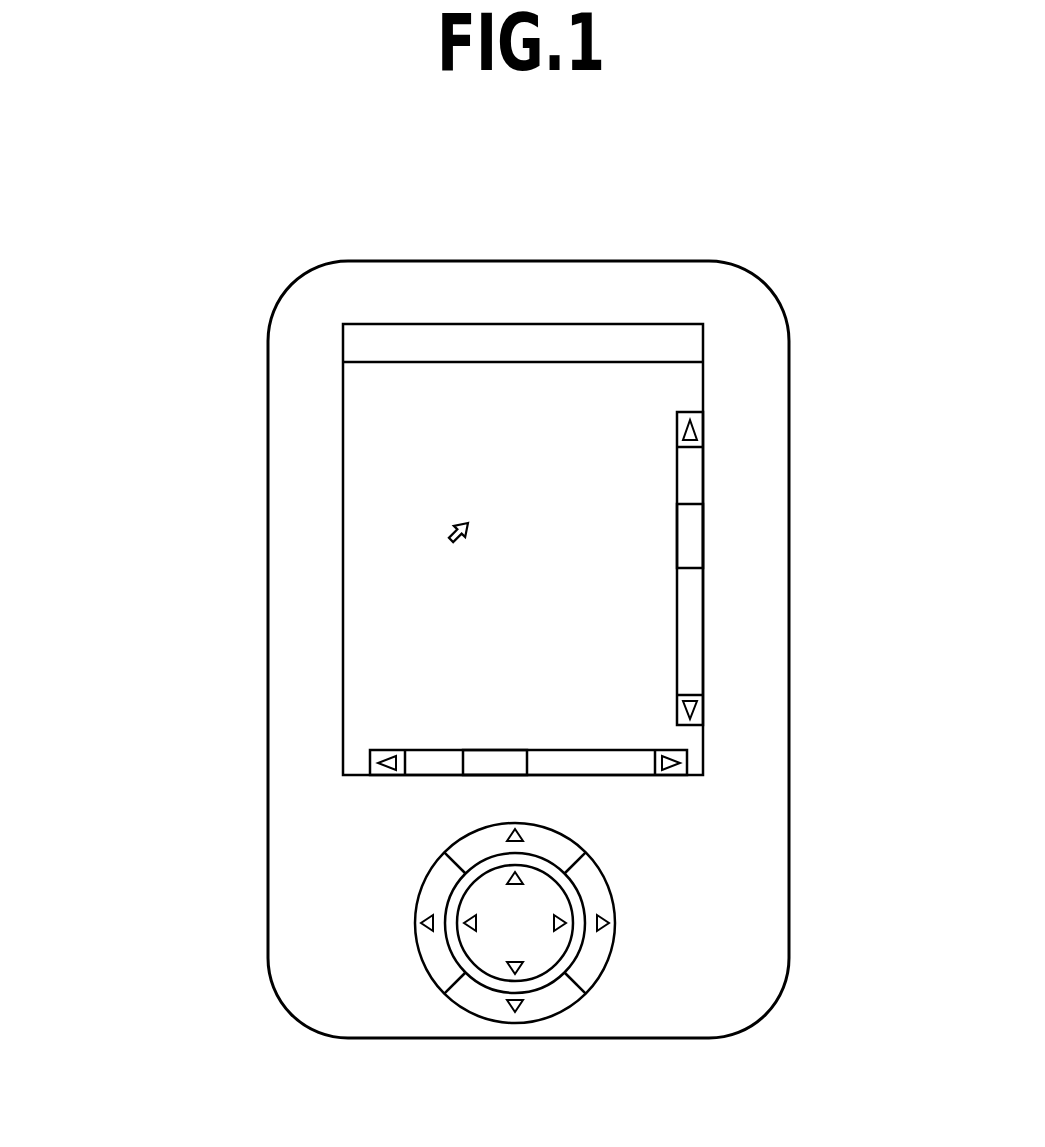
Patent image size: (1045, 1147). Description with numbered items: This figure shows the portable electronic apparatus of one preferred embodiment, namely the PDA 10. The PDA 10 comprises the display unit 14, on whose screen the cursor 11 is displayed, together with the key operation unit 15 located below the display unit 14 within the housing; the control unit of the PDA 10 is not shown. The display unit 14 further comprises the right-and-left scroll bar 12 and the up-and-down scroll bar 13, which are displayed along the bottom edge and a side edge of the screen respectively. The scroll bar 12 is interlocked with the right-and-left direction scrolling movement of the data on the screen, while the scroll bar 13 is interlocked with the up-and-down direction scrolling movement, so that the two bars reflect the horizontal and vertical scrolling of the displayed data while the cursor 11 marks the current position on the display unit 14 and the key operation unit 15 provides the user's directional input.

The PDA 10 is at (627, 260).
The cursor 11 is at (440, 530).
The right-and-left scroll bar 12 is at (425, 748).
The up-and-down scroll bar 13 is at (704, 540).
The display unit 14 is at (372, 407).
The key operation unit 15 is at (611, 883).